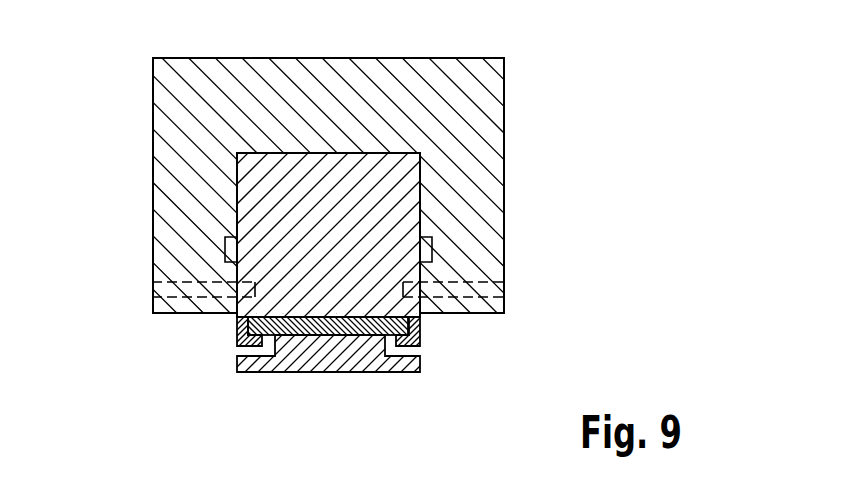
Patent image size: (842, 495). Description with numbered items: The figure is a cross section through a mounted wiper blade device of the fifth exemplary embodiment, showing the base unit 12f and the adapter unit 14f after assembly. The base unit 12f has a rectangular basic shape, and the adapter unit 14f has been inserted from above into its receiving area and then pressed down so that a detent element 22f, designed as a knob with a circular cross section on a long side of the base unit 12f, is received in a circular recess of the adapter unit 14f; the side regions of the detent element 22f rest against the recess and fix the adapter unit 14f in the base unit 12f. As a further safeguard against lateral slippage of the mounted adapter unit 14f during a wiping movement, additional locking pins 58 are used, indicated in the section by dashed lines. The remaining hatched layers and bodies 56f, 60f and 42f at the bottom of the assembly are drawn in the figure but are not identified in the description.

The adapter unit 14f is at (195, 104).
The base unit 12f is at (270, 207).
The detent element 22f is at (223, 257).
The locking pins 58 is at (178, 303).
The contact pad 56f is at (237, 331).
The bonding layer 60f is at (370, 327).
The carrier substrate 42f is at (307, 353).